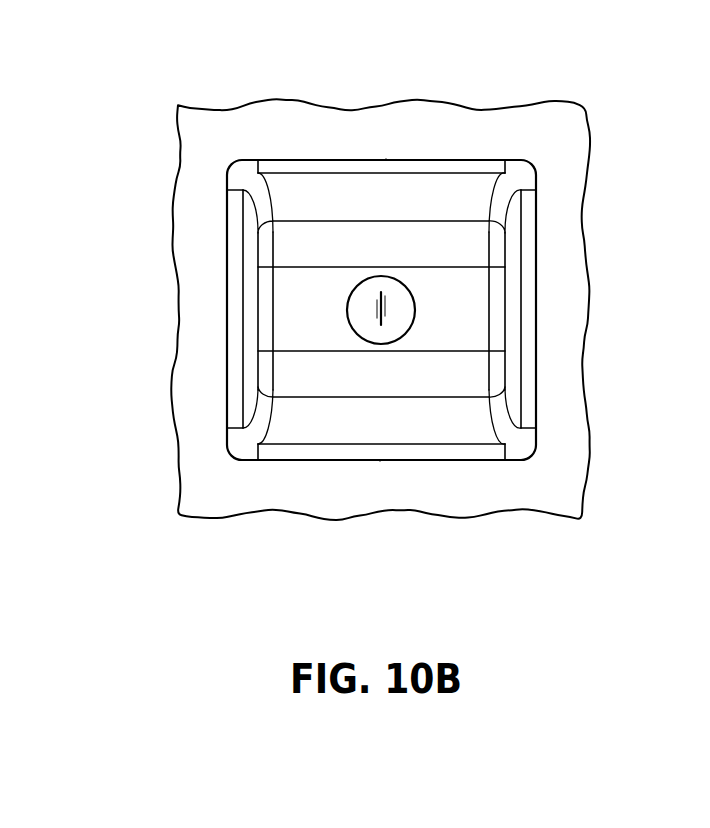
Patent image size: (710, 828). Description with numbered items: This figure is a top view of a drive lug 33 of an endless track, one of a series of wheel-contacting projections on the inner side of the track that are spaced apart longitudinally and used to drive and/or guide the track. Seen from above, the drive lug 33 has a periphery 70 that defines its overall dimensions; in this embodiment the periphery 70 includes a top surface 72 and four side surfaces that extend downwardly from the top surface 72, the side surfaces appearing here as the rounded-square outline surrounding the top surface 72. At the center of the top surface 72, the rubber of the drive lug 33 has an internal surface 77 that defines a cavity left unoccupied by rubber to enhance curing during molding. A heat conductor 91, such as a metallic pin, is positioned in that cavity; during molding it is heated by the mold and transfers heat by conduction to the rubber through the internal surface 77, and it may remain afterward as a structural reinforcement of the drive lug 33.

The drive lug 33 is at (217, 150).
The periphery 70 is at (227, 323).
The top surface 72 is at (313, 296).
The internal surface 77 is at (411, 292).
The heat conductor 91 is at (394, 323).